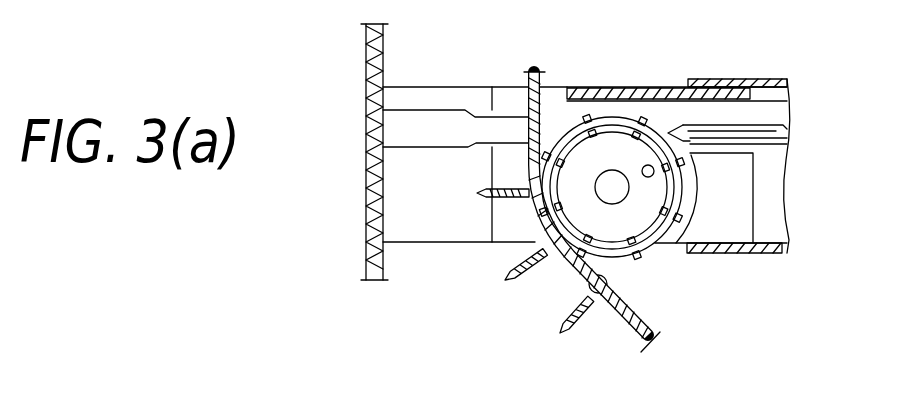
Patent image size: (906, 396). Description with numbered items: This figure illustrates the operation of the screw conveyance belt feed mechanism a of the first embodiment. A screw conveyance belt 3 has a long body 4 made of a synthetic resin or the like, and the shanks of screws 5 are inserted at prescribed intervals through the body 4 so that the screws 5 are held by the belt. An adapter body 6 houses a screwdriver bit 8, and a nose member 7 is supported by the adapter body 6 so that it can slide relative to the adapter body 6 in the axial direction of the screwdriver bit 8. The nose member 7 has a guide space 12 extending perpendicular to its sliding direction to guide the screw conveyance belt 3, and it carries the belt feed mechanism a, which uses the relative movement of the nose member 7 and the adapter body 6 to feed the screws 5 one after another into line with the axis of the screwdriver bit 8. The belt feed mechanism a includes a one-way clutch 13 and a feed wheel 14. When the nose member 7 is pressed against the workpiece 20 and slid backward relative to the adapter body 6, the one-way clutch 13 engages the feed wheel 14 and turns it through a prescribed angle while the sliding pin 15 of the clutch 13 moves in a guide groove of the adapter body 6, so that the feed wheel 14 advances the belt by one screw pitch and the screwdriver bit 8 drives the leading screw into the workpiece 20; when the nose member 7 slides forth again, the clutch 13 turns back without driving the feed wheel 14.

The screw conveyance belt 3 is at (630, 330).
The body 4 is at (570, 278).
The screws 5 is at (590, 312).
The adapter body 6 is at (770, 80).
The nose member 7 is at (598, 86).
The screwdriver bit 8 is at (773, 130).
The guide space 12 is at (513, 223).
The one-way clutch 13 is at (663, 245).
The feed wheel 14 is at (643, 203).
The sliding pin 15 is at (650, 165).
The workpiece 20 is at (372, 282).
The screw conveyance belt feed mechanism a is at (587, 108).